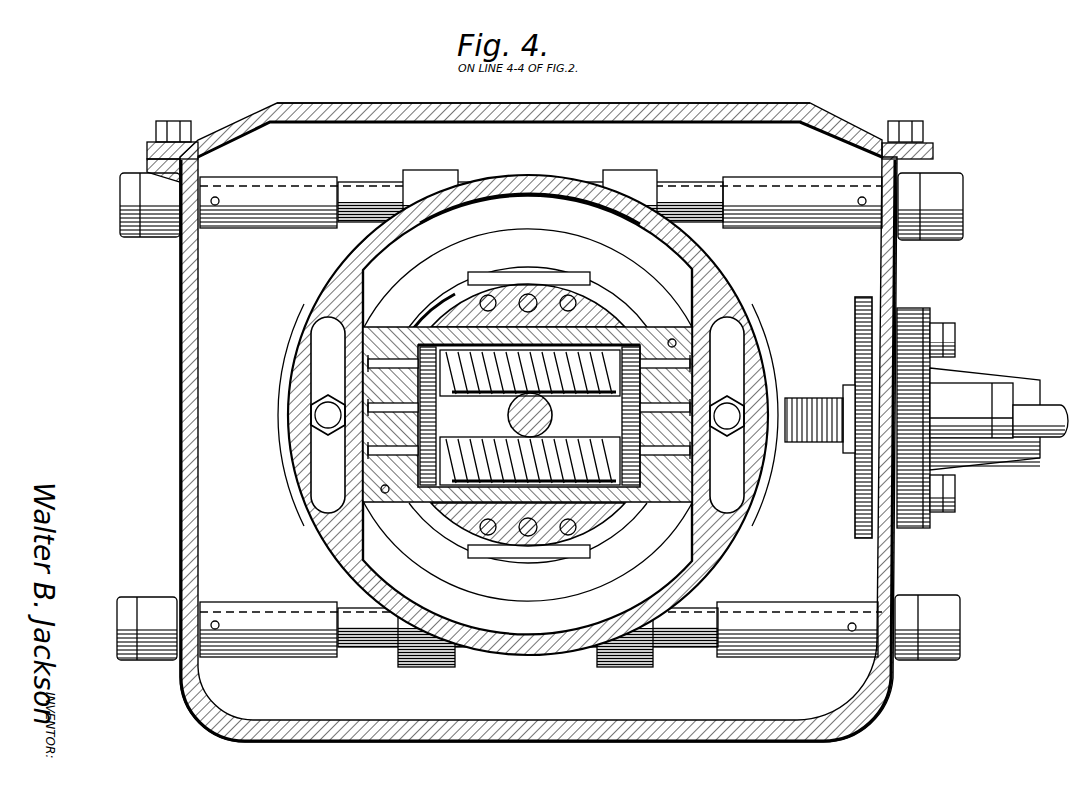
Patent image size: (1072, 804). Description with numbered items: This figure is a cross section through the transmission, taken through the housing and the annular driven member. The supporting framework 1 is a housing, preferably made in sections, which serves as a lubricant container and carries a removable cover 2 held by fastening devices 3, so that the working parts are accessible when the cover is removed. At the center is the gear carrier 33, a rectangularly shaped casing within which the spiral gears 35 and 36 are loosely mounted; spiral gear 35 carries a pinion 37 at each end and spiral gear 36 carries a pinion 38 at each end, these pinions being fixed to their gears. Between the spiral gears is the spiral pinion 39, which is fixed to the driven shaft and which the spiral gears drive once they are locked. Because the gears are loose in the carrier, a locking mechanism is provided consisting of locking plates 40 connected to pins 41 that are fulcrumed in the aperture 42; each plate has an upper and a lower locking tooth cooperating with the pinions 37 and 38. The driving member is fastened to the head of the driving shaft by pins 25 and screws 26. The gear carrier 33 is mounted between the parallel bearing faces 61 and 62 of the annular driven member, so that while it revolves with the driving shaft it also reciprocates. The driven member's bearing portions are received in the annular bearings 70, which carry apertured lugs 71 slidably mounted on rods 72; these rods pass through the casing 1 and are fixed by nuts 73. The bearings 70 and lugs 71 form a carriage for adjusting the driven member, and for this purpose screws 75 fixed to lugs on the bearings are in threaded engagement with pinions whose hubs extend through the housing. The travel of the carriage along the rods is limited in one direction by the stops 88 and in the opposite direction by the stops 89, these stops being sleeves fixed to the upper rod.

The supporting framework 1 is at (898, 266).
The removable cover 2 is at (432, 103).
The fastening devices 3 is at (173, 130).
The pins 25 is at (531, 296).
The screws 26 is at (482, 300).
The gear carrier 33 is at (395, 528).
The spiral gear 35 is at (510, 412).
The spiral gear 36 is at (470, 430).
The pinion 37 is at (418, 330).
The pinion 38 is at (428, 512).
The spiral pinion 39 is at (622, 405).
The locking plates 40 is at (418, 407).
The pins 41 is at (365, 362).
The aperture 42 is at (365, 450).
The bearing face 61 is at (388, 248).
The bearing face 62 is at (686, 262).
The annular bearings 70 is at (730, 545).
The apertured lugs 71 is at (429, 175).
The rods 72 is at (700, 186).
The nuts 73 is at (126, 238).
The screws 75 is at (825, 442).
The stops 88 is at (258, 230).
The stops 89 is at (780, 230).